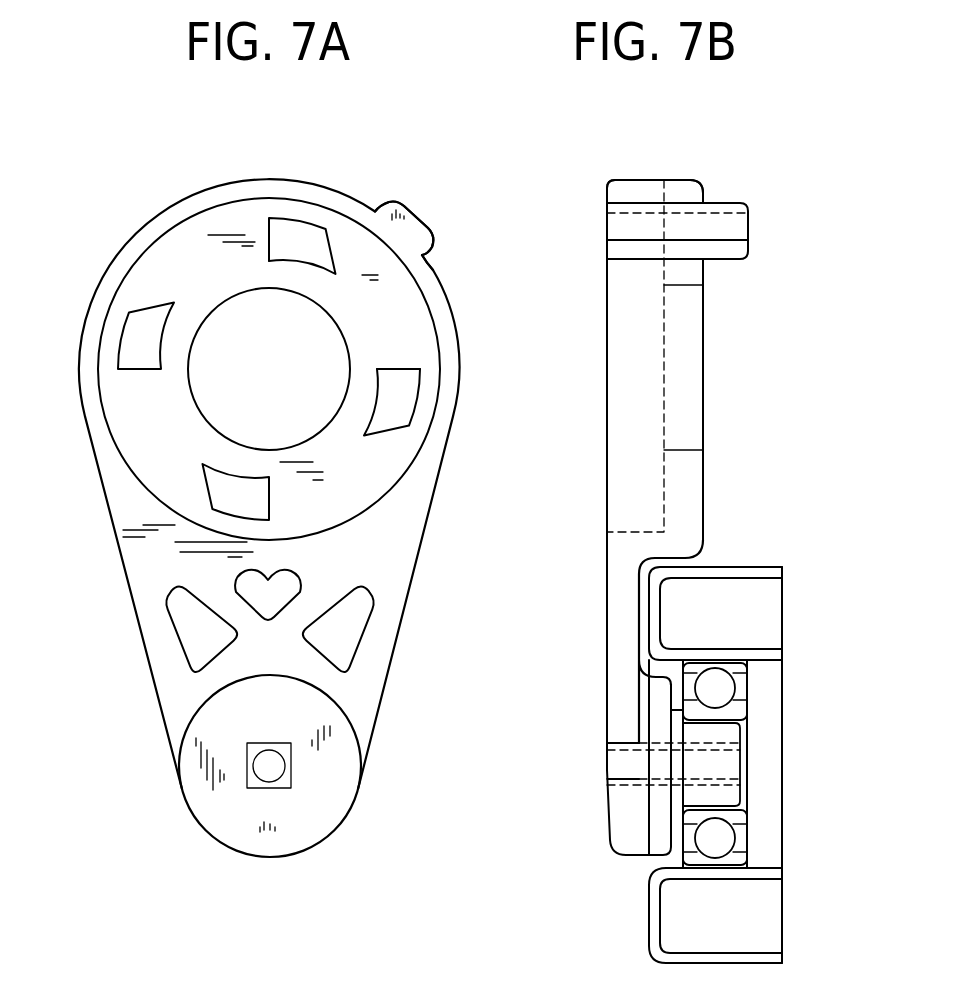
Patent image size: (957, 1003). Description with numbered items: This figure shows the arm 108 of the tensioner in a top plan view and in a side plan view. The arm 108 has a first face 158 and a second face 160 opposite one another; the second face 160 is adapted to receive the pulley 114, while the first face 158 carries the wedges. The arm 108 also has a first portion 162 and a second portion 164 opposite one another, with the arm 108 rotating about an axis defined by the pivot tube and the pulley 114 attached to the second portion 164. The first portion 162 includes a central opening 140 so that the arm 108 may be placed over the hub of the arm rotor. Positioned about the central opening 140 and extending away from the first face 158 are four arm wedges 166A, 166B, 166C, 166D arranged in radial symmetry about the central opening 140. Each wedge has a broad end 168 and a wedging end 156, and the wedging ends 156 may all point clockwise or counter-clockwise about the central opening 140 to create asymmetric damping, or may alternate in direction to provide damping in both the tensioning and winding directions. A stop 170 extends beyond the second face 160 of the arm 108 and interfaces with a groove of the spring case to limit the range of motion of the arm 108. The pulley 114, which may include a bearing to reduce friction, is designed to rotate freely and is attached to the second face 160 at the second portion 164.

In FIG. 7A, the arm 108 is at (415, 189).
In FIG. 7B, the arm 108 is at (696, 184).
In FIG. 7B, the pulley 114 is at (782, 915).
In FIG. 7A, the central opening 140 is at (233, 325).
In FIG. 7A, the wedging end 156 is at (372, 458).
In FIG. 7B, the first face 158 is at (582, 510).
In FIG. 7B, the second face 160 is at (703, 535).
In FIG. 7A, the first portion 162 is at (222, 185).
In FIG. 7B, the first portion 162 is at (647, 180).
In FIG. 7A, the second portion 164 is at (362, 792).
In FIG. 7B, the second portion 164 is at (606, 813).
In FIG. 7A, the arm wedge 166A is at (207, 457).
In FIG. 7A, the arm wedge 166B is at (138, 308).
In FIG. 7A, the arm wedge 166C is at (300, 222).
In FIG. 7A, the arm wedge 166D is at (393, 405).
In FIG. 7A, the broad end 168 is at (402, 370).
In FIG. 7A, the stop 170 is at (423, 222).
In FIG. 7B, the stop 170 is at (720, 260).